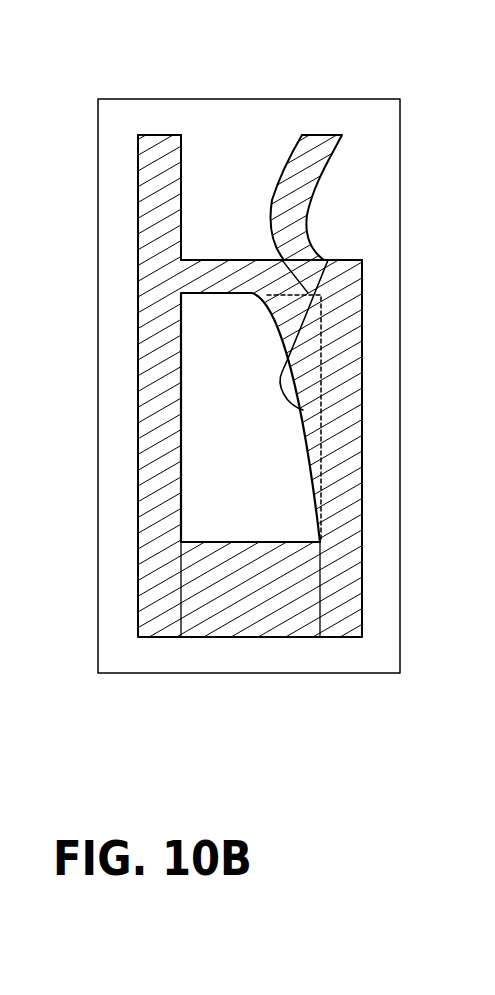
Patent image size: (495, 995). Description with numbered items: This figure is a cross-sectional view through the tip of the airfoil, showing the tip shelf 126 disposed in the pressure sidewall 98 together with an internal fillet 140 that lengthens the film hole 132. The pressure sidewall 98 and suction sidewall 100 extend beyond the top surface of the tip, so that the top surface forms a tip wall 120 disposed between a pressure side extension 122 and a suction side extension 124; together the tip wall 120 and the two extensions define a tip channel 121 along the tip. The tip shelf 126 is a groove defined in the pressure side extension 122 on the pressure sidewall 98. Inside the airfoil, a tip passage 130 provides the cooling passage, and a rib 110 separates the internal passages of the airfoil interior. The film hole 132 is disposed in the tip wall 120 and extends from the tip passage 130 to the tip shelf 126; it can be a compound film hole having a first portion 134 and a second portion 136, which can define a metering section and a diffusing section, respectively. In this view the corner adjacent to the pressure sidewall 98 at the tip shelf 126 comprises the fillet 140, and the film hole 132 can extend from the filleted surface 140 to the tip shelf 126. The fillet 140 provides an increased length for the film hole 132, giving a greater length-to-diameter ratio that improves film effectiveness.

The pressure sidewall 98 is at (363, 340).
The suction sidewall 100 is at (138, 457).
The rib 110 is at (257, 599).
The tip wall 120 is at (225, 260).
The tip channel 121 is at (272, 143).
The pressure side extension 122 is at (331, 134).
The suction side extension 124 is at (137, 196).
The tip shelf 126 is at (376, 188).
The tip passage 130 is at (260, 492).
The film hole 132 is at (300, 271).
The first portion 134 is at (312, 316).
The second portion 136 is at (338, 260).
The fillet 140 is at (303, 410).